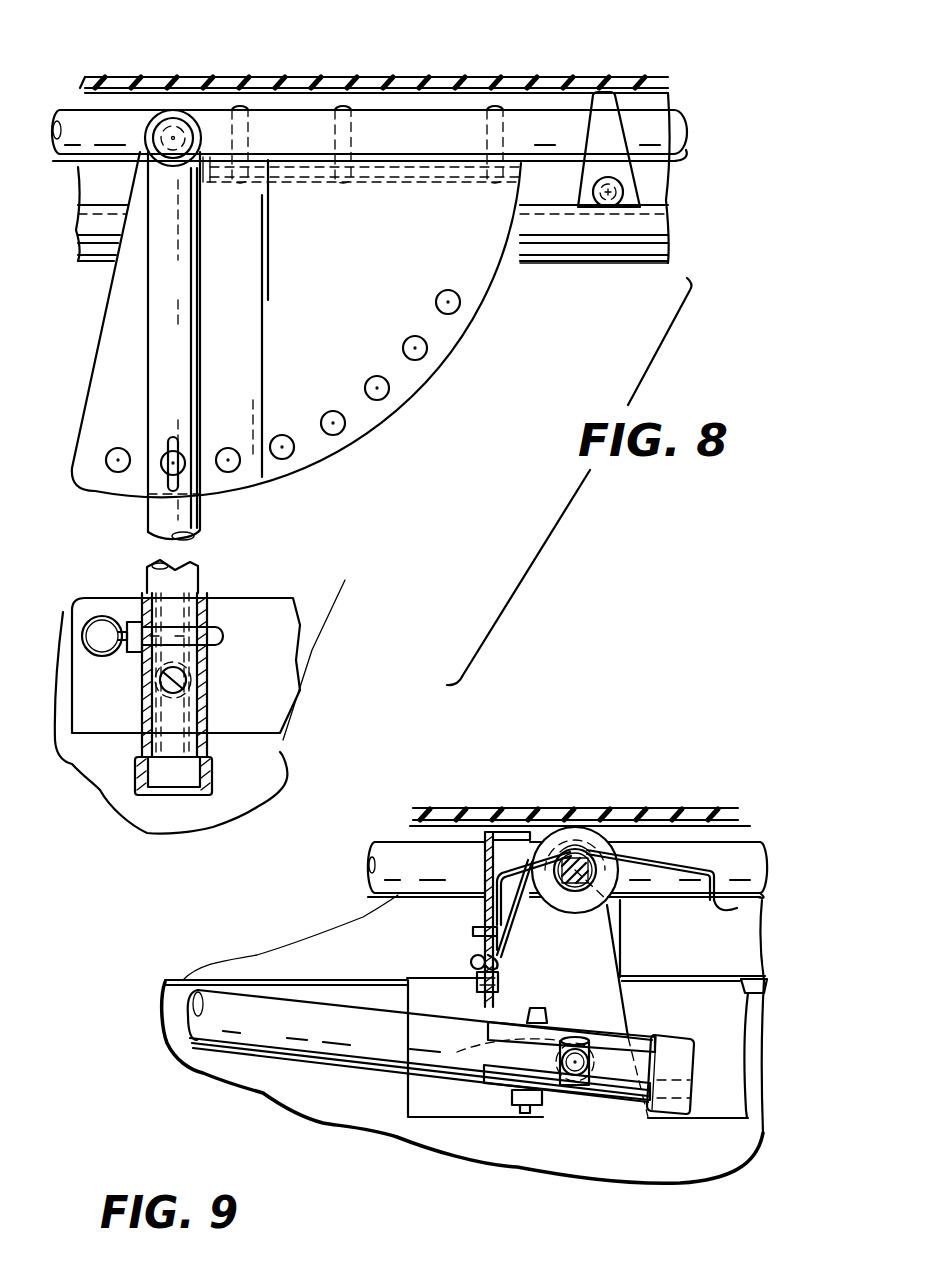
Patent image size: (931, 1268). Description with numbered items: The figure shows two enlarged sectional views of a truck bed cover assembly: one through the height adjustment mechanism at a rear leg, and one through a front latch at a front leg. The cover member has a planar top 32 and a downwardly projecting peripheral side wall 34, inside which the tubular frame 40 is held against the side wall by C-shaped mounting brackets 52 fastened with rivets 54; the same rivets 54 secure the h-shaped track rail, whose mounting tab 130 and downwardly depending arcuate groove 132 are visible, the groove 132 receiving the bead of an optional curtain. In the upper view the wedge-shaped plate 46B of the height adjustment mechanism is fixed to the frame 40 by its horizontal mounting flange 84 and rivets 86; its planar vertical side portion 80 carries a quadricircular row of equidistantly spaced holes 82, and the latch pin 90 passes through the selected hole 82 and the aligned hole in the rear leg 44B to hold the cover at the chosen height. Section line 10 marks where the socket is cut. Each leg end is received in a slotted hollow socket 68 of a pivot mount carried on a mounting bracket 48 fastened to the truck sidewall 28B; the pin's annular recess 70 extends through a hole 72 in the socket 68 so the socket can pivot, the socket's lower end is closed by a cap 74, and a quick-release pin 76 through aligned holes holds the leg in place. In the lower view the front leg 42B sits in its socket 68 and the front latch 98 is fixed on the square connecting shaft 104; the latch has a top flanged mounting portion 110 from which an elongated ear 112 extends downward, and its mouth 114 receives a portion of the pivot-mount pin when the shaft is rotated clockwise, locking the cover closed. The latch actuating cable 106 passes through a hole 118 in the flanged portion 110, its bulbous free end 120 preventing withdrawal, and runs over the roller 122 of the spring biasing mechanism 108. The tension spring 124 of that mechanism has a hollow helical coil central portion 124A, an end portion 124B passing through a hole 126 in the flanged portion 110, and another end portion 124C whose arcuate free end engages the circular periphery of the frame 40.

In FIG. 8, the section line 10- 10 is at (173, 48).
In FIG. 9, the truck bed sidewall 28B is at (723, 1145).
In FIG. 8, the top 32 is at (460, 82).
In FIG. 9, the top 32 is at (460, 812).
In FIG. 9, the peripheral side wall 34 is at (717, 948).
In FIG. 8, the frame 40 is at (558, 120).
In FIG. 9, the frame 40 is at (393, 848).
In FIG. 9, the leg 42B is at (250, 1040).
In FIG. 8, the leg 44B is at (150, 313).
In FIG. 8, the wedge-shaped plate 46B is at (468, 338).
In FIG. 8, the mounting bracket 48 is at (293, 603).
In FIG. 9, the mounting bracket 48 is at (721, 1008).
In FIG. 8, the C-shaped mounting bracket 52 is at (615, 106).
In FIG. 8, the rivet 54 is at (620, 193).
In FIG. 8, the socket 68 is at (127, 748).
In FIG. 9, the socket 68 is at (613, 1050).
In FIG. 8, the annular recess 70 is at (187, 673).
In FIG. 9, the annular recess 70 is at (565, 1080).
In FIG. 8, the hole 72 is at (187, 685).
In FIG. 9, the hole 72 is at (580, 1085).
In FIG. 8, the cap 74 is at (213, 773).
In FIG. 9, the cap 74 is at (687, 1085).
In FIG. 8, the quick-release pin 76 is at (102, 616).
In FIG. 9, the quick-release pin 76 is at (512, 1100).
In FIG. 8, the planar vertical side portion 80 is at (363, 353).
In FIG. 8, the holes 82 is at (333, 436).
In FIG. 8, the mounting flange 84 is at (393, 178).
In FIG. 8, the rivets 86 is at (342, 107).
In FIG. 8, the latch pin 90 is at (150, 488).
In FIG. 9, the front latch 98 is at (620, 1150).
In FIG. 9, the connecting shaft 104 is at (570, 853).
In FIG. 9, the latch actuating cable 106 is at (750, 823).
In FIG. 9, the spring biasing mechanism 108 is at (603, 898).
In FIG. 9, the flanged mounting portion 110 is at (483, 910).
In FIG. 9, the ear 112 is at (645, 1147).
In FIG. 9, the mouth 114 is at (485, 1047).
In FIG. 9, the hole 118 is at (470, 957).
In FIG. 9, the free end 120 is at (473, 960).
In FIG. 9, the roller 122 is at (550, 835).
In FIG. 9, the tension spring 124 is at (681, 850).
In FIG. 9, the helical coil central portion 124A is at (580, 845).
In FIG. 9, the end portion 124B is at (472, 932).
In FIG. 9, the end portion 124C is at (742, 908).
In FIG. 9, the hole 126 is at (477, 935).
In FIG. 8, the mounting tab 130 is at (668, 200).
In FIG. 8, the arcuate groove 132 is at (683, 237).